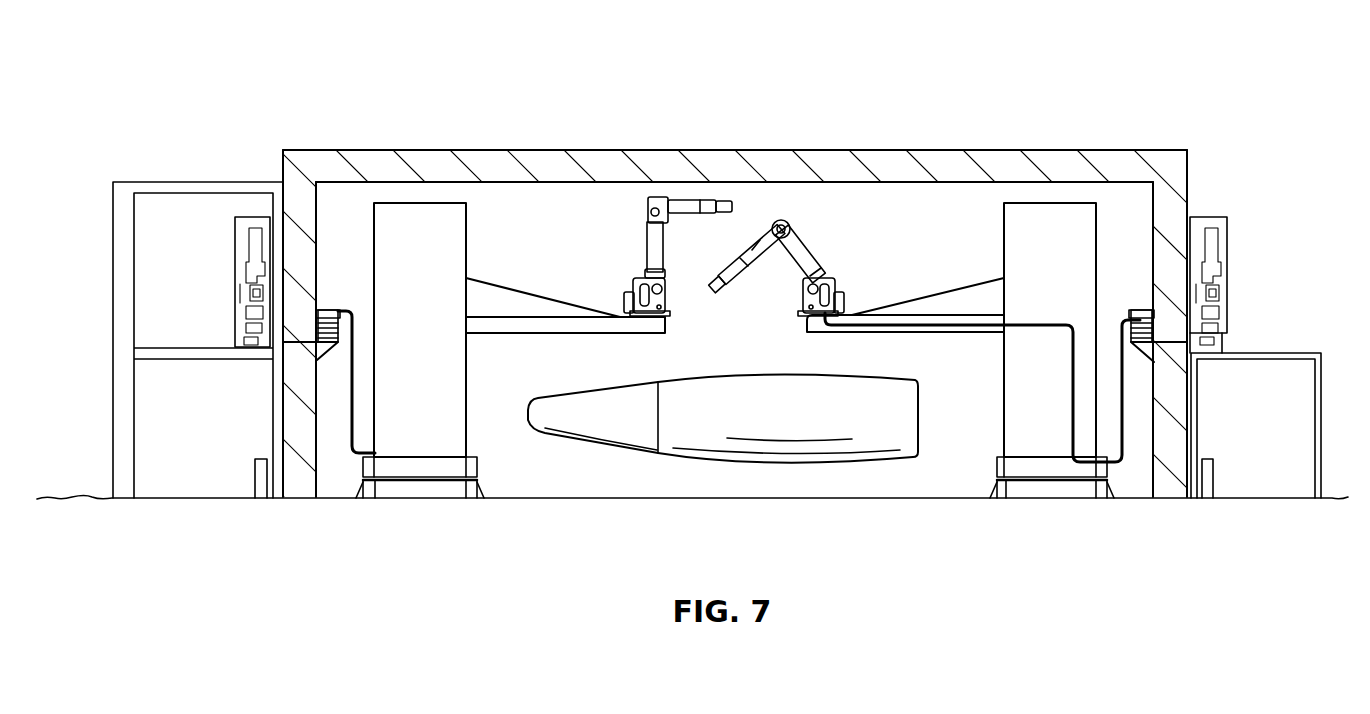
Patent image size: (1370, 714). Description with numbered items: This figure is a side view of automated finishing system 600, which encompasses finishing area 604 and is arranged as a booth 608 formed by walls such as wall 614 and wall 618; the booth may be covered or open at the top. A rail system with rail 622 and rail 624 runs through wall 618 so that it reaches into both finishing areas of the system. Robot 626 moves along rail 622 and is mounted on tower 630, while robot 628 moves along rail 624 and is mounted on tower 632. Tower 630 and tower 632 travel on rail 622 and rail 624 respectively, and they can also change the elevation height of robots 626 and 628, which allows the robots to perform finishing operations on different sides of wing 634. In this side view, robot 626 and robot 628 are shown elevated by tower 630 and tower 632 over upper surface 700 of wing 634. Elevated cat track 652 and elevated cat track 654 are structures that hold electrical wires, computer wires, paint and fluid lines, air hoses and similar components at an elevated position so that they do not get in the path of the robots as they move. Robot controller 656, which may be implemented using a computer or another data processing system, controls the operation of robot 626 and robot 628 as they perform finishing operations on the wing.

The automated finishing system 600 is at (893, 110).
The finishing area 604 is at (915, 488).
The booth 608 is at (1190, 184).
The wall 614 is at (283, 170).
The wall 618 is at (540, 150).
The rail 622 is at (418, 492).
The rail 624 is at (1056, 488).
The robot 626 is at (650, 214).
The robot 628 is at (806, 250).
The tower 630 is at (466, 233).
The tower 632 is at (1004, 244).
The wing 634 is at (770, 420).
The elevated cat track 652 is at (330, 308).
The elevated cat track 654 is at (1138, 308).
The robot controller 656 is at (1228, 260).
The upper surface 700 is at (737, 373).